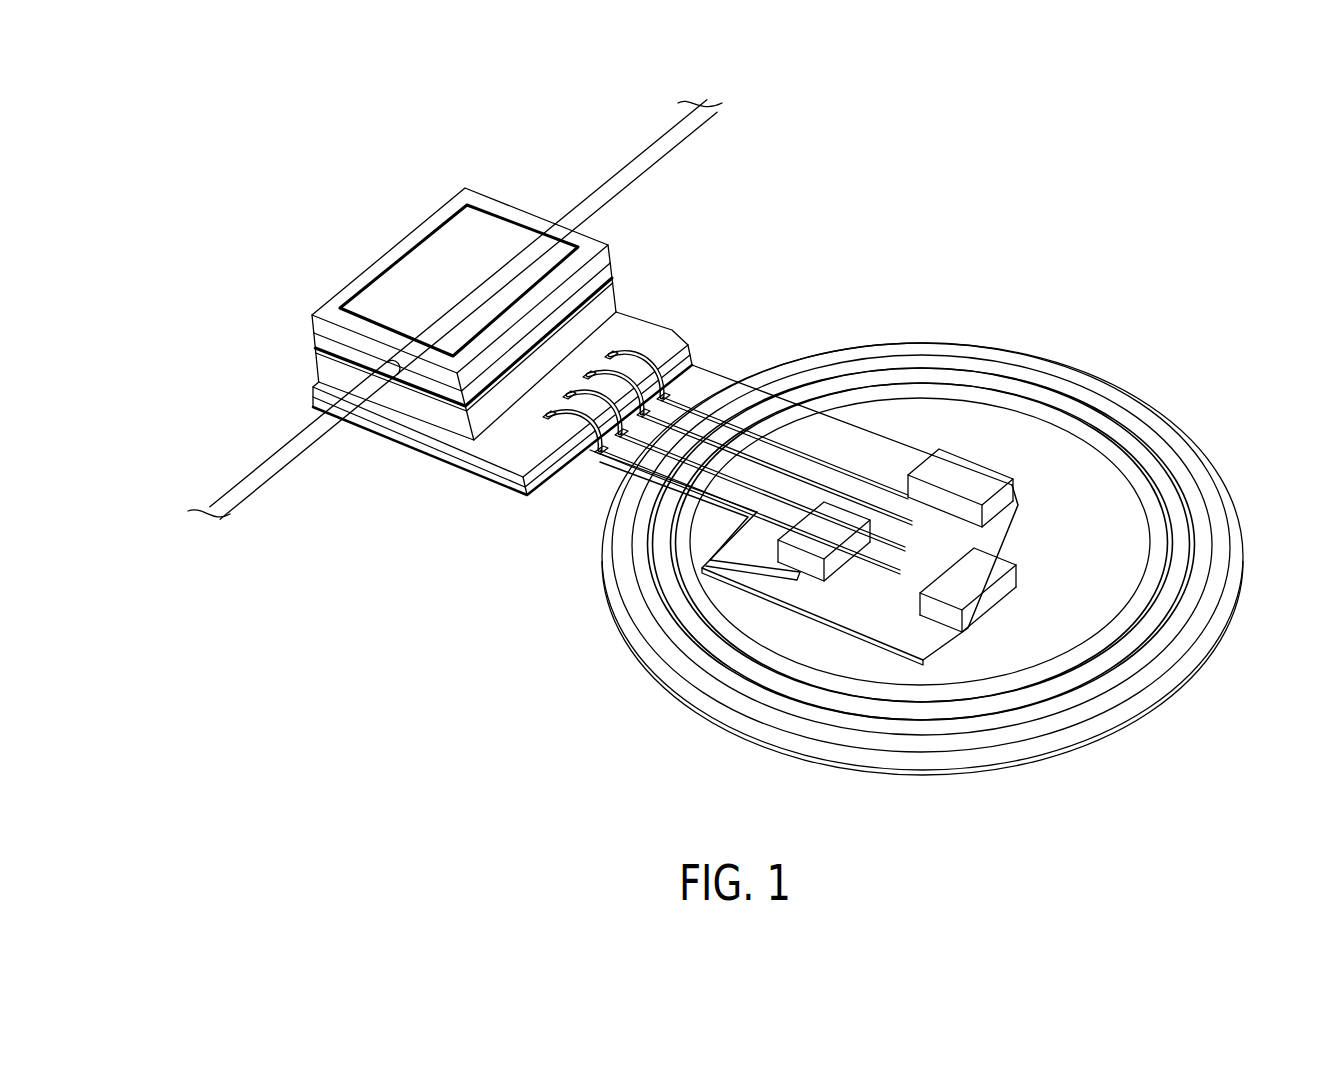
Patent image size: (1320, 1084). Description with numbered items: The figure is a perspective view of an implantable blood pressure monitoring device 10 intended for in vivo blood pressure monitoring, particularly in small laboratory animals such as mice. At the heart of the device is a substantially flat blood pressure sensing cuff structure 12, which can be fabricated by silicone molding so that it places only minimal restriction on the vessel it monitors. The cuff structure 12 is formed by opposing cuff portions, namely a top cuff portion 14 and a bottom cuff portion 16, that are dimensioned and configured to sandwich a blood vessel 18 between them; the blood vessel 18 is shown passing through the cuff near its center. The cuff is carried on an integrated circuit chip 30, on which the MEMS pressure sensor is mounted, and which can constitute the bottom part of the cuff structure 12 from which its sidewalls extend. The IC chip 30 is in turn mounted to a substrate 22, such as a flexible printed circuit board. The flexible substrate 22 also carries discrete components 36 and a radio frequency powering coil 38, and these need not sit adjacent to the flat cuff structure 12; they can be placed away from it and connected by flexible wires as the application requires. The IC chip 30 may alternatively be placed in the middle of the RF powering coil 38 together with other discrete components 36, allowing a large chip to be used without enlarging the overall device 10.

The implantable blood pressure monitoring device 10 is at (968, 220).
The blood pressure sensing cuff structure 12 is at (654, 240).
The top cuff portion 14 is at (390, 248).
The bottom cuff portion 16 is at (640, 288).
The blood vessel 18 is at (632, 148).
The substrate 22 is at (440, 448).
The integrated circuit (IC) chip 30 is at (655, 330).
The discrete components 36 is at (1015, 492).
The radio frequency (RF) powering coil 38 is at (1008, 395).